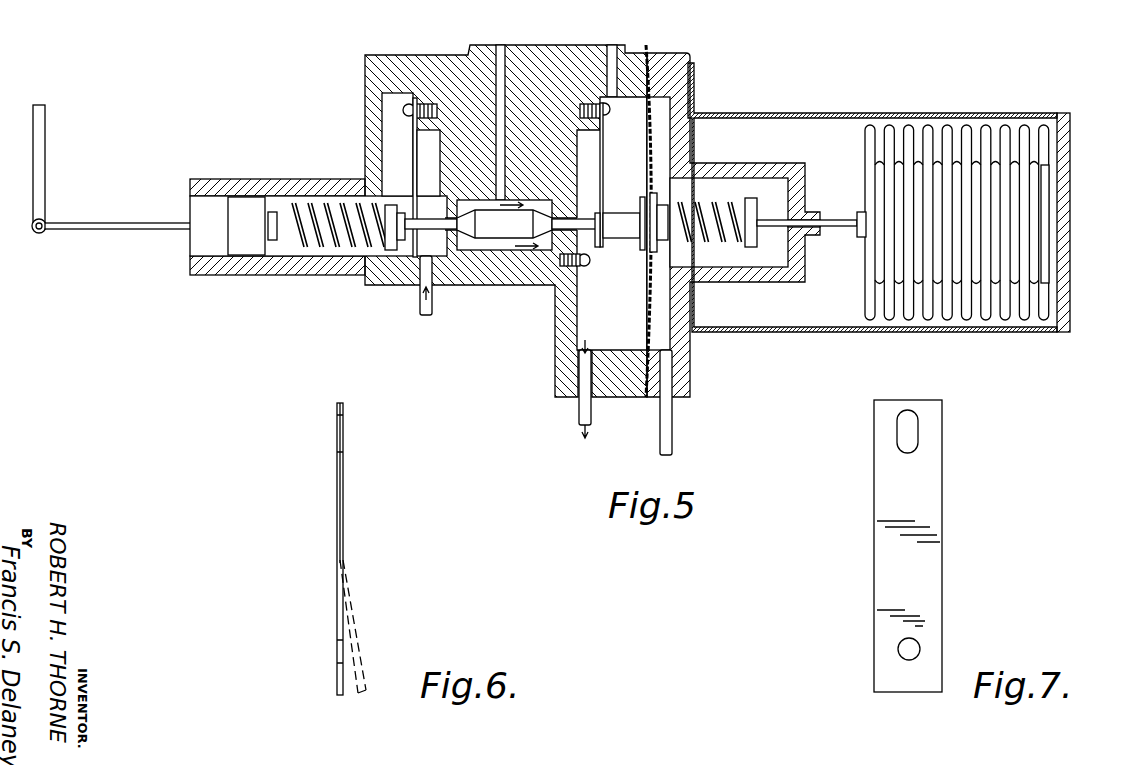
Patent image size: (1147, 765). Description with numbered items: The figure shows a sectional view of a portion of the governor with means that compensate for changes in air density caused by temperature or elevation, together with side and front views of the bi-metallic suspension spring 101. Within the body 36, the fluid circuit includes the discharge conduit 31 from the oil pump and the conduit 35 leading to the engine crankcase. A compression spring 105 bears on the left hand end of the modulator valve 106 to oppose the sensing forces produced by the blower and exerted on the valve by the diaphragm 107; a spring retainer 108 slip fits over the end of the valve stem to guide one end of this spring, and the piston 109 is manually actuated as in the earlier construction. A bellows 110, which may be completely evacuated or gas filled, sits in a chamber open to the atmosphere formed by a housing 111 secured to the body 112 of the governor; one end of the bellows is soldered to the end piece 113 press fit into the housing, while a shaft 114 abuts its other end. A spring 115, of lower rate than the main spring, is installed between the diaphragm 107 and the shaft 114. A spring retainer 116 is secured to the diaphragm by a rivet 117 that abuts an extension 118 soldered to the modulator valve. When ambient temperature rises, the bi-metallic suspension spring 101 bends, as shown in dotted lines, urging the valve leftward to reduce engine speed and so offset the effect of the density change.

In FIG. 5, the body 36 is at (487, 55).
In FIG. 5, the body of the governor 112 is at (680, 57).
In FIG. 5, the diaphragm 107 is at (651, 112).
In FIG. 5, the housing 111 is at (849, 113).
In FIG. 5, the bellows 110 is at (1002, 128).
In FIG. 5, the end piece 113 is at (1068, 263).
In FIG. 5, the suspension spring 101 is at (413, 148).
In FIG. 6, the suspension spring 101 is at (346, 524).
In FIG. 7, the suspension spring 101 is at (934, 496).
In FIG. 5, the compression spring 105 is at (336, 196).
In FIG. 5, the piston 109 is at (250, 252).
In FIG. 5, the spring retainer 108 is at (406, 248).
In FIG. 5, the discharge conduit 31 is at (431, 306).
In FIG. 5, the modulator valve 106 is at (495, 240).
In FIG. 5, the extension 118 is at (627, 236).
In FIG. 5, the spring retainer 116 is at (669, 206).
In FIG. 5, the rivet 117 is at (669, 239).
In FIG. 5, the spring 115 is at (728, 248).
In FIG. 5, the shaft 114 is at (852, 229).
In FIG. 5, the conduit 35 is at (579, 412).